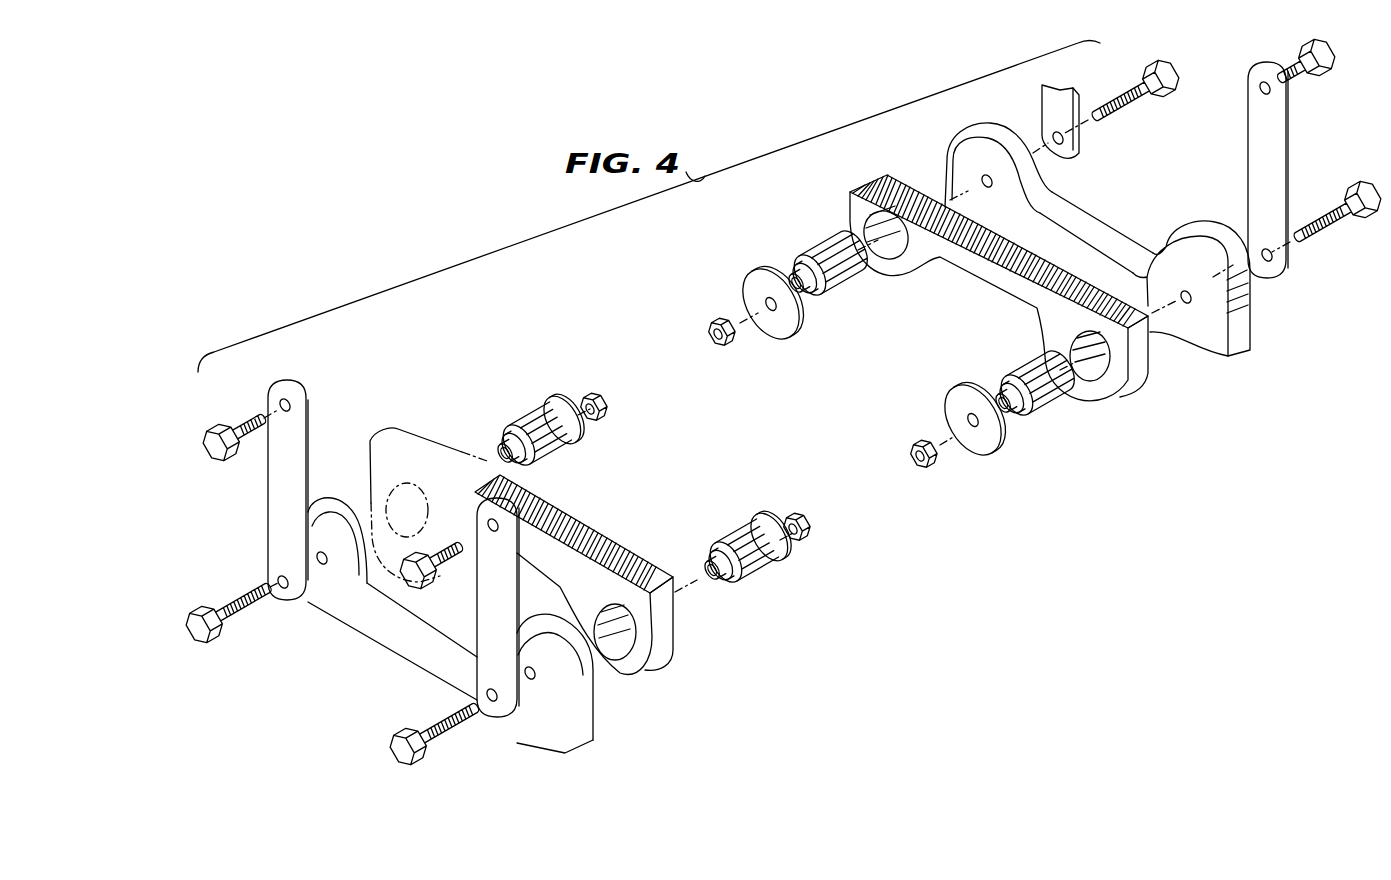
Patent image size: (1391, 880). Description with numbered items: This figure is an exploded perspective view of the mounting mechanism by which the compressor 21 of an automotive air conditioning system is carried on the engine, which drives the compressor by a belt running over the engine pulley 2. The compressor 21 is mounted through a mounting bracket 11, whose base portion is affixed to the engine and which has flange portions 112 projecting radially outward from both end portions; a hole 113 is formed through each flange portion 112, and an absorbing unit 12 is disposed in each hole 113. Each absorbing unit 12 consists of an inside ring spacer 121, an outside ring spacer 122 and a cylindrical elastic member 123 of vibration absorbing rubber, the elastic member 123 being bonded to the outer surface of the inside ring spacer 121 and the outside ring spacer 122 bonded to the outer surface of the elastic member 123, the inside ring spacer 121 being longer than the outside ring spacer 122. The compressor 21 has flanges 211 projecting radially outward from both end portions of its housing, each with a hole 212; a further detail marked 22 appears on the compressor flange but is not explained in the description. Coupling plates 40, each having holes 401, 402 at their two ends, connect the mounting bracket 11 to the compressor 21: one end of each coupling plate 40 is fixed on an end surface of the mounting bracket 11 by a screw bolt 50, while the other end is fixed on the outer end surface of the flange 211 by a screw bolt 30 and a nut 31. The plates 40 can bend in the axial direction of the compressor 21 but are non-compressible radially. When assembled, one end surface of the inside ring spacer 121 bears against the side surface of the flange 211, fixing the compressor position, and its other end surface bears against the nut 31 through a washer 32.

The pulley 2 is at (1187, 305).
The mounting bracket 11 is at (592, 514).
The absorbing unit 12 is at (767, 416).
The compressor 21 is at (398, 672).
The hole in bracket tab 22 is at (984, 180).
The screw bolt 30 is at (195, 610).
The nut 31 is at (610, 412).
The washer 32 is at (568, 400).
The coupling plate 40 is at (280, 522).
The screw bolt 50 is at (232, 452).
The flange portion 112 is at (602, 575).
The hole 113 is at (620, 648).
The inside ring spacer 121 is at (505, 445).
The outside ring spacer 122 is at (540, 415).
The elastic member 123 is at (505, 440).
The flange 211 is at (397, 648).
The hole 212 is at (322, 565).
The hole 401 is at (282, 398).
The hole 402 is at (286, 595).